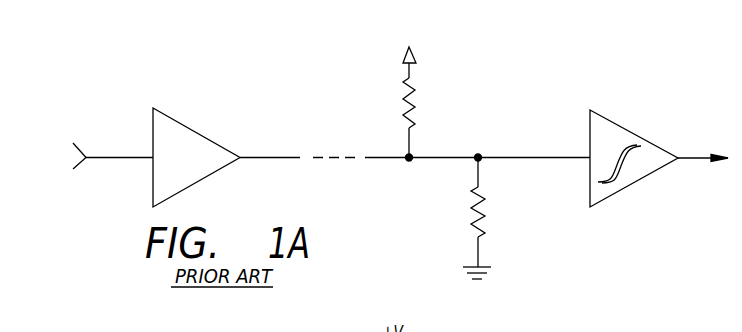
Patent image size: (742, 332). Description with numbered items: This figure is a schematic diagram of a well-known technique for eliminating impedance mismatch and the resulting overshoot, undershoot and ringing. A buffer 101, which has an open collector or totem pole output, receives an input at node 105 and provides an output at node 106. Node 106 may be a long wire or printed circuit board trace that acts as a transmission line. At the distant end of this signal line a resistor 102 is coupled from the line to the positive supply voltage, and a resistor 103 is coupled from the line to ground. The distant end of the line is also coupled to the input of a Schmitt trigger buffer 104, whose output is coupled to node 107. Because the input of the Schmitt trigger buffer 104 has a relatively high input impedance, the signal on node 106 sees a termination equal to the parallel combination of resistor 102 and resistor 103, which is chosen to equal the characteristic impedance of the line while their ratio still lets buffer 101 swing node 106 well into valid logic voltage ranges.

The buffer 101 is at (192, 127).
The resistor 102 is at (413, 98).
The resistor 103 is at (473, 209).
The Schmitt trigger buffer 104 is at (612, 118).
The node 105 is at (118, 157).
The node 106 is at (265, 157).
The node 107 is at (695, 157).